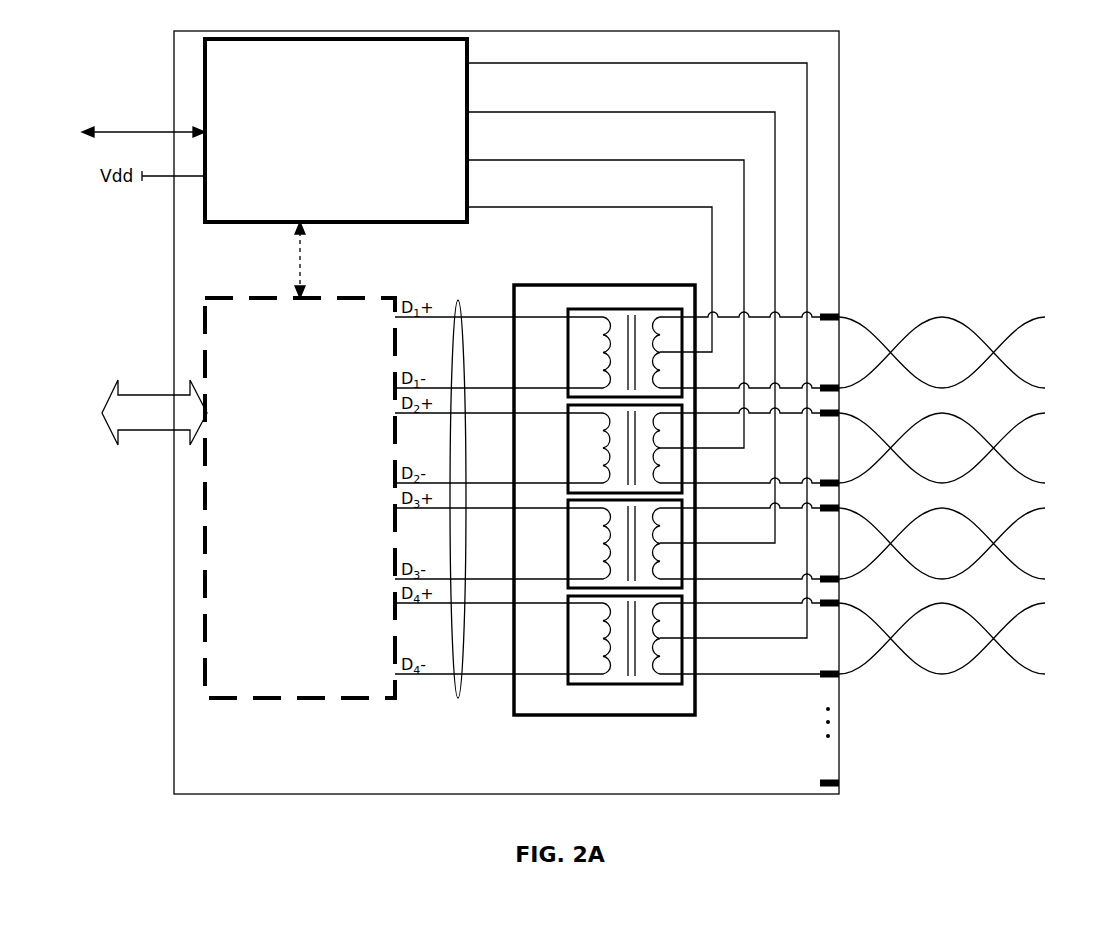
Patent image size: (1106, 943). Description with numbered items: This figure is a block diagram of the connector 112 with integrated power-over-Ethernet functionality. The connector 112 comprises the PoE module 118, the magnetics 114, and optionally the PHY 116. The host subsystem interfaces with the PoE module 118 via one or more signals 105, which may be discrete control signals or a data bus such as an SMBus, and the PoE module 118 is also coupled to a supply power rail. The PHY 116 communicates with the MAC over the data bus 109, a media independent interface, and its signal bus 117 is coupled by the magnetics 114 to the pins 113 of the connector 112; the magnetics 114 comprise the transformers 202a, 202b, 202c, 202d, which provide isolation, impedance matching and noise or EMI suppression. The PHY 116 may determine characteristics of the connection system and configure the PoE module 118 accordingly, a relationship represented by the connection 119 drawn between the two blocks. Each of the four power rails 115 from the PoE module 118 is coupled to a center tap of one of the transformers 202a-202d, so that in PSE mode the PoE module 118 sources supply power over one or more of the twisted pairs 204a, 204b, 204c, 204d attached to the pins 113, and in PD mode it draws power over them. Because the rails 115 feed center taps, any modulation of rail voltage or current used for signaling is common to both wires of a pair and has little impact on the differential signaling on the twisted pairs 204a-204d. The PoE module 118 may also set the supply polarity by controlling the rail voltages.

The signals 105 is at (143, 132).
The PoE module 118 is at (336, 130).
The control link between PoE and PHY 119 is at (304, 269).
The PHY 116 is at (300, 498).
The data bus 109 is at (154, 412).
The signal bus 117 is at (458, 310).
The connector 112 is at (580, 529).
The magnetics 114 is at (601, 510).
The transformer 202a is at (568, 352).
The transformer 202b is at (568, 448).
The transformer 202c is at (568, 543).
The transformer 202d is at (568, 639).
The power rails 115 is at (637, 340).
The pins 113 is at (841, 317).
The twisted pair 204a is at (942, 352).
The twisted pair 204b is at (942, 448).
The twisted pair 204c is at (942, 543).
The twisted pair 204d is at (942, 638).